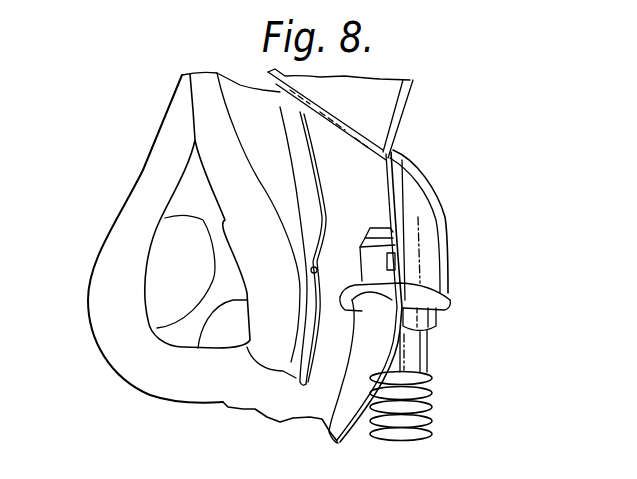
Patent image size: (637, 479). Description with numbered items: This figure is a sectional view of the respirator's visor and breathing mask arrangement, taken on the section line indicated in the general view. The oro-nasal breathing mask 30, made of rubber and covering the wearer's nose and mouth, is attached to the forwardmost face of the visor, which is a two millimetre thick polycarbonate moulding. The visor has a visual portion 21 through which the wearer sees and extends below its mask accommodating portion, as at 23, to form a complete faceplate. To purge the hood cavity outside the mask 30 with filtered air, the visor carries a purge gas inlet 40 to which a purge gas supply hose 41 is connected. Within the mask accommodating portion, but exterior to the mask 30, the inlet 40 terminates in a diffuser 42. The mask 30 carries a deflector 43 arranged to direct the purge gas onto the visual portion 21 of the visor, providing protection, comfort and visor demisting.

The visual portion 21 is at (383, 107).
The lower visor extension 23 is at (357, 367).
The oro-nasal breathing mask 30 is at (128, 218).
The purge gas inlet 40 is at (407, 343).
The purge gas supply hose 41 is at (420, 410).
The diffuser 42 is at (395, 260).
The deflector 43 is at (340, 192).